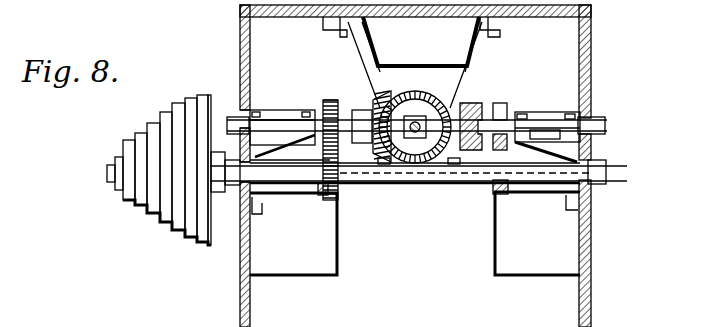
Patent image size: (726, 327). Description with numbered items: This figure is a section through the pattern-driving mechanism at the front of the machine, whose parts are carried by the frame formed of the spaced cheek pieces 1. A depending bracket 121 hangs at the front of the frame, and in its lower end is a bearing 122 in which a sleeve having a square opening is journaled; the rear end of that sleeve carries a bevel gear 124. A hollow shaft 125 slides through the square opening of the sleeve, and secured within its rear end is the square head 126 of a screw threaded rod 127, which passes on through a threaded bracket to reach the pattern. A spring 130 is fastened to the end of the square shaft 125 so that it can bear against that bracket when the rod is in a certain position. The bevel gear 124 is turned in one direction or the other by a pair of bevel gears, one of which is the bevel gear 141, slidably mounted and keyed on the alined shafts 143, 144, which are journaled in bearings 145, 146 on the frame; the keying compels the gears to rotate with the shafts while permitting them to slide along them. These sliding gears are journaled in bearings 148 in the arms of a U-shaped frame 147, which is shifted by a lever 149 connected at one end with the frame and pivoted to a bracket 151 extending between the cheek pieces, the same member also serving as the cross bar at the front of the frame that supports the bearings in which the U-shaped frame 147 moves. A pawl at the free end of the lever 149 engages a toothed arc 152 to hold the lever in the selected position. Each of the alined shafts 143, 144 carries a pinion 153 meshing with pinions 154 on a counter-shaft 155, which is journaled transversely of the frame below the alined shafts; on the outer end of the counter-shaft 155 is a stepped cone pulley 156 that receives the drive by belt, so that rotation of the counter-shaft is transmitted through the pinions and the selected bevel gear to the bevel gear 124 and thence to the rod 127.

The cheek pieces 1 is at (240, 60).
The depending bracket 121 is at (465, 33).
The bearing 122 is at (413, 137).
The bevel gear 124 is at (408, 112).
The hollow shaft 125 is at (470, 103).
The square head 126 is at (362, 126).
The screw threaded rod 127 is at (373, 100).
The spring 130 is at (422, 108).
The bevel gear 141 is at (500, 103).
The alined shaft 143 is at (230, 118).
The alined shaft 144 is at (604, 118).
The bearing 145 is at (282, 100).
The bearing 146 is at (552, 105).
The U-shaped frame 147 is at (338, 198).
The bearings 148 is at (546, 152).
The lever 149 is at (432, 186).
The bracket 151 is at (308, 198).
The toothed arc 152 is at (345, 214).
The pinion 153 is at (328, 98).
The pinions 154 is at (506, 196).
The counter-shaft 155 is at (627, 173).
The stepped cone pulley 156 is at (142, 134).